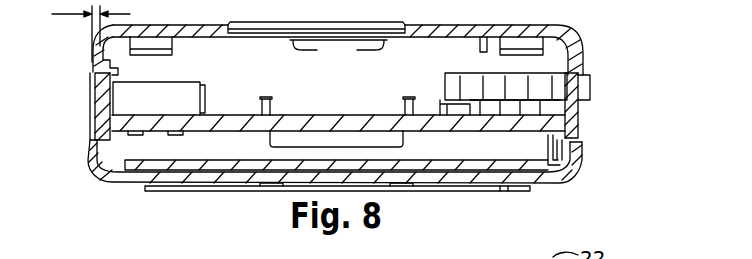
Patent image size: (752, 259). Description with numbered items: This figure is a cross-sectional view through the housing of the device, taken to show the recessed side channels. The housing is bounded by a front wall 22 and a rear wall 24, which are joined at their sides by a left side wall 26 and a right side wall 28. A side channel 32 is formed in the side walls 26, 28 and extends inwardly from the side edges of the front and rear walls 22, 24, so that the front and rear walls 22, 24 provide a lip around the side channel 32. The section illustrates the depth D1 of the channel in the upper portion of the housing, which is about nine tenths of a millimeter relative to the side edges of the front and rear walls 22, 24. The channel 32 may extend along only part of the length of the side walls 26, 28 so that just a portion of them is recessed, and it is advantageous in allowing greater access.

The front wall 22 is at (497, 190).
The rear wall 24 is at (497, 25).
The left side wall 26 is at (95, 125).
The right side wall 28 is at (586, 118).
The side channel 32 is at (95, 85).
The depth of the channel D1 is at (78, 32).